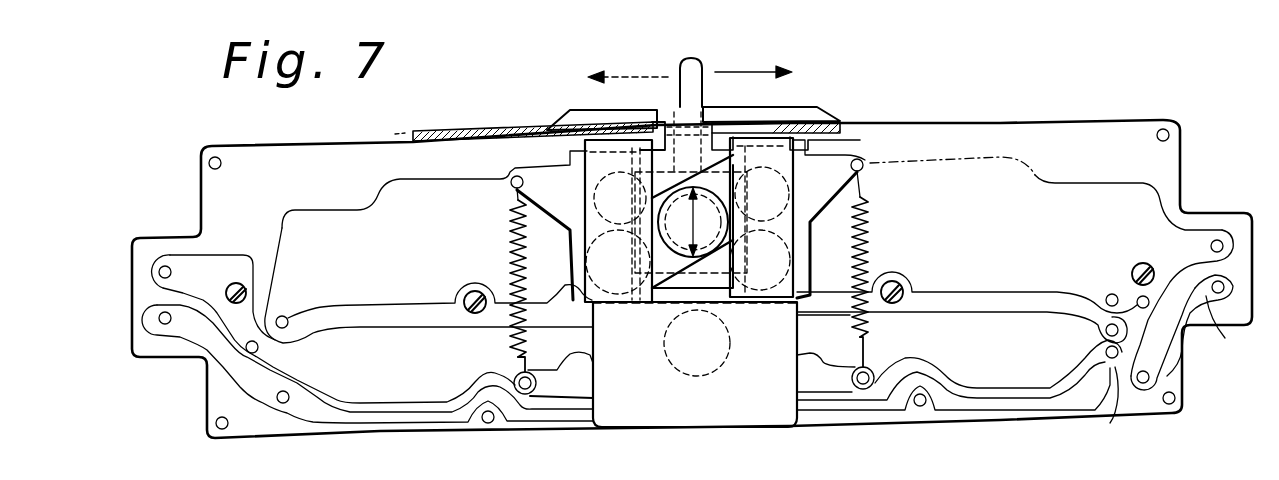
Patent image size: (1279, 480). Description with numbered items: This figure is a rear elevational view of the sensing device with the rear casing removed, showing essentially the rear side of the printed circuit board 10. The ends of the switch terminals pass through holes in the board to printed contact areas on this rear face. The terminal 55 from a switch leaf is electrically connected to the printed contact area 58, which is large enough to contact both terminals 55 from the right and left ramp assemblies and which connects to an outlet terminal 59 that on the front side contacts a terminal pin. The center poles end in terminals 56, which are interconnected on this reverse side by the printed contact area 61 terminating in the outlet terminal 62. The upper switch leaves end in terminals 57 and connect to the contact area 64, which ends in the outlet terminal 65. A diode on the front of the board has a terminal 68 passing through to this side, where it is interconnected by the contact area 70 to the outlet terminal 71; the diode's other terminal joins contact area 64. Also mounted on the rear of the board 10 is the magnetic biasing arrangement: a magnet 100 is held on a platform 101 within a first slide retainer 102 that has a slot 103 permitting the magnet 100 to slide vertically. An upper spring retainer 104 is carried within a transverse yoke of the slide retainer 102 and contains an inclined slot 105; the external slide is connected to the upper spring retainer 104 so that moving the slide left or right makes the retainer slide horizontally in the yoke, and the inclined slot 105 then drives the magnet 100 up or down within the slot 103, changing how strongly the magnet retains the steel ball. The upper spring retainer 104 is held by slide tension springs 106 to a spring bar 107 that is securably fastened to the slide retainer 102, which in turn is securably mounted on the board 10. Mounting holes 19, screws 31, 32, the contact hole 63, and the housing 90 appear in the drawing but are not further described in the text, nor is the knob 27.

The printed circuit board 10 is at (272, 157).
The mounting holes 19 is at (208, 148).
The actuating knob 27 is at (690, 57).
The screw 31 is at (465, 293).
The screw 32 is at (248, 290).
The terminal 55 is at (285, 405).
The terminal 56 is at (262, 352).
The terminal 57 is at (289, 320).
The printed contact area 58 is at (1013, 400).
The outlet terminal 59 is at (157, 320).
The printed contact area 61 is at (418, 385).
The outlet terminal 62 is at (158, 272).
The contact hole 63 is at (1137, 296).
The contact area 64 is at (967, 180).
The outlet terminal 65 is at (1218, 238).
The terminal 68 is at (1142, 388).
The contact area 70 is at (1208, 302).
The outlet terminal 71 is at (1225, 338).
The housing 90 is at (724, 368).
The magnet 100 is at (710, 215).
The platform 101 is at (672, 124).
The slide retainer 102 is at (852, 170).
The slot 103 is at (657, 123).
The upper spring retainer 104 is at (537, 180).
The inclined slot 105 is at (634, 173).
The slide tension springs 106 is at (507, 228).
The spring bar 107 is at (835, 385).